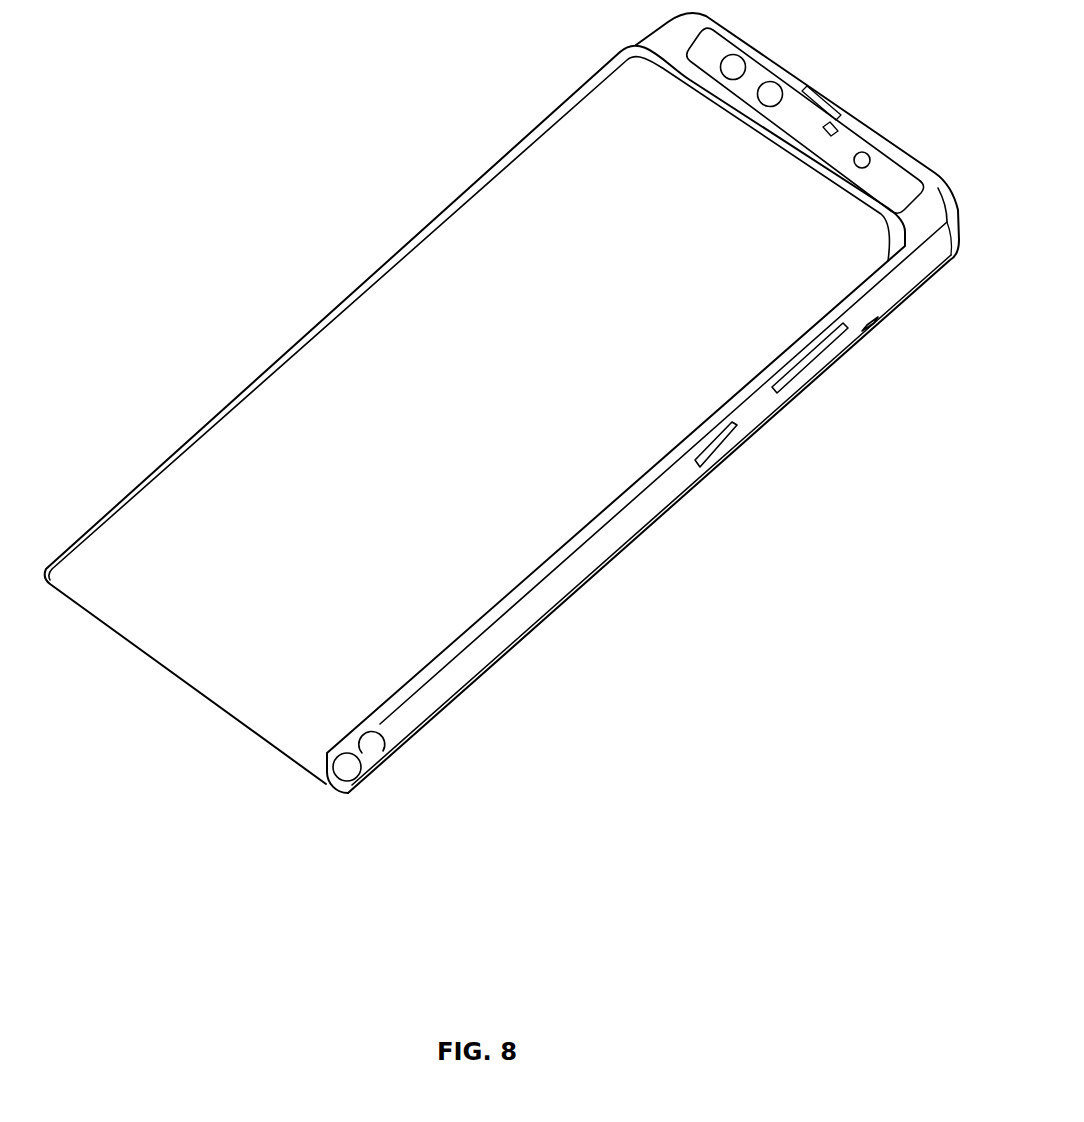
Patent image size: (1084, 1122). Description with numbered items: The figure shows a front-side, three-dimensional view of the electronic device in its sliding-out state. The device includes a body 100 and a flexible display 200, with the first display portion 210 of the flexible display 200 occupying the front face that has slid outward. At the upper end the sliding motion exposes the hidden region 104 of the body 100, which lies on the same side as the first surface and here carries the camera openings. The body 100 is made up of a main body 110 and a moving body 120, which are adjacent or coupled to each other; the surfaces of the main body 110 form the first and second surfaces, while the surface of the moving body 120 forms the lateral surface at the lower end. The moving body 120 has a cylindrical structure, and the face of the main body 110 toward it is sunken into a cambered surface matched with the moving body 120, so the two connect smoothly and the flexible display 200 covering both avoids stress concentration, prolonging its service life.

The body 100 is at (688, 717).
The hidden region 104 is at (793, 103).
The main body 110 is at (613, 528).
The moving body 120 is at (352, 766).
The flexible display 200 is at (287, 327).
The first display portion 210 is at (427, 297).